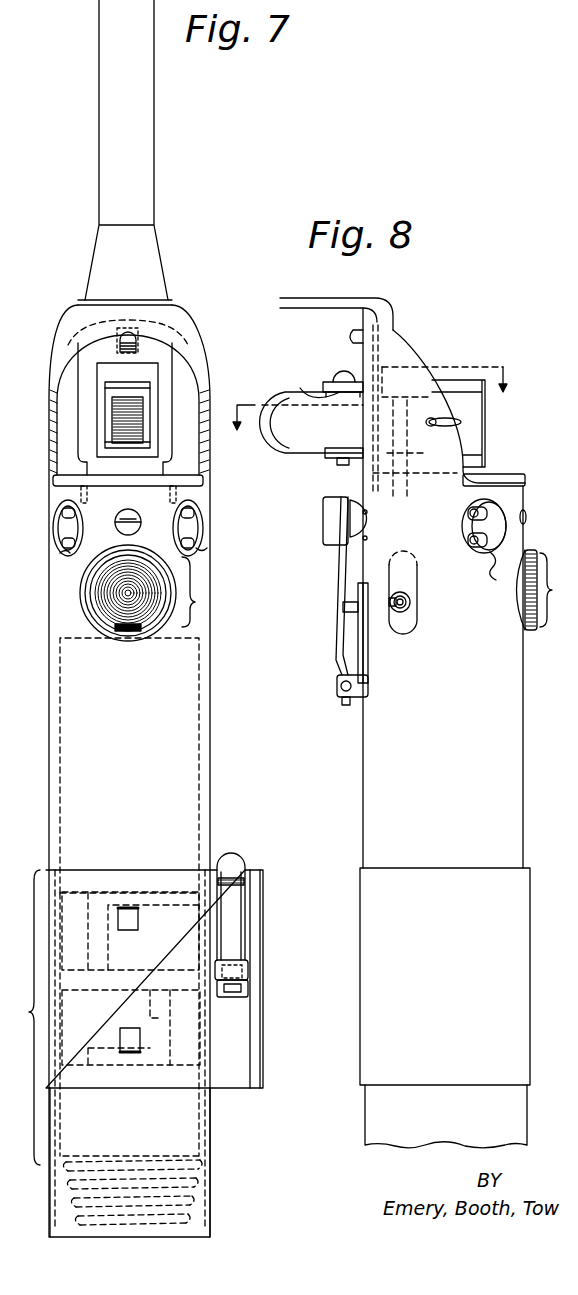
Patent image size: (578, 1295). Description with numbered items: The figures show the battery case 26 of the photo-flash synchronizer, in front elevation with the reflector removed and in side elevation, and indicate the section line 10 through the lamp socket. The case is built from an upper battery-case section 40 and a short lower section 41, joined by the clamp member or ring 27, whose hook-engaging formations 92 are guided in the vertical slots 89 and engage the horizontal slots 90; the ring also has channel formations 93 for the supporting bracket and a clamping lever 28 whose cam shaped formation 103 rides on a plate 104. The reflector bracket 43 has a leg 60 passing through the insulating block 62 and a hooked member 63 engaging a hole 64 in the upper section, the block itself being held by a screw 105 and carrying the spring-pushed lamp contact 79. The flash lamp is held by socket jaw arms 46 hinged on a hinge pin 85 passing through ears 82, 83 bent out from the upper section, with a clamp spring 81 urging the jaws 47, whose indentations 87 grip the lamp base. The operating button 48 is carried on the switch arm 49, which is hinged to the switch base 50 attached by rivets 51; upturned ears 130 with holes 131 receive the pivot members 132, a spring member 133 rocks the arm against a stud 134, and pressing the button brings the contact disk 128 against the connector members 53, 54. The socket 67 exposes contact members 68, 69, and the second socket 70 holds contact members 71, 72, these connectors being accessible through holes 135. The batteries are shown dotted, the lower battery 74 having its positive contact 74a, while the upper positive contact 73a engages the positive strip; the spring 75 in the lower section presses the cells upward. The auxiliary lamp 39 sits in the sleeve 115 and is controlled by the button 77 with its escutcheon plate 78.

In FIG. 8, the section line 10- 10 is at (375, 411).
In FIG. 7, the battery case 26 is at (135, 1017).
In FIG. 7, the battery-case clamp member or ring 27 is at (77, 880).
In FIG. 8, the battery-case clamp member or ring 27 is at (463, 873).
In FIG. 7, the clamping lever 28 is at (233, 866).
In FIG. 7, the auxiliary lamp 39 is at (195, 602).
In FIG. 8, the auxiliary lamp 39 is at (548, 590).
In FIG. 7, the upper battery-case section 40 is at (210, 798).
In FIG. 8, the upper battery-case section 40 is at (516, 758).
In FIG. 7, the lower battery-case section 41 is at (210, 1207).
In FIG. 8, the lower battery-case section 41 is at (517, 1118).
In FIG. 7, the reflector bracket 43 is at (154, 140).
In FIG. 8, the reflector bracket 43 is at (337, 302).
In FIG. 8, the socket jaw arms or clamp members 46 is at (290, 445).
In FIG. 8, the clamping jaws 47 is at (475, 433).
In FIG. 8, the operating button 48 is at (323, 517).
In FIG. 8, the spring member or switch arm 49 is at (338, 596).
In FIG. 8, the bracket or switch base 50 is at (369, 655).
In FIG. 8, the rivets 51 is at (363, 584).
In FIG. 8, the contact member 53 is at (367, 512).
In FIG. 8, the connecting member 54 is at (367, 539).
In FIG. 7, the leg of reflector bracket 60 is at (84, 377).
In FIG. 7, the insulating block 62 is at (133, 481).
In FIG. 8, the insulating block 62 is at (512, 477).
In FIG. 7, the hooked member 63 is at (140, 333).
In FIG. 8, the hooked member 63 is at (353, 335).
In FIG. 7, the hole 64 is at (84, 338).
In FIG. 7, the socket 67 is at (190, 527).
In FIG. 7, the contact member 68 is at (190, 510).
In FIG. 7, the contact member 69 is at (195, 541).
In FIG. 7, the second socket 70 is at (68, 527).
In FIG. 8, the second socket 70 is at (488, 530).
In FIG. 7, the contact member 71 is at (67, 512).
In FIG. 8, the contact member 71 is at (479, 507).
In FIG. 7, the contact member 72 is at (67, 541).
In FIG. 8, the contact member 72 is at (478, 549).
In FIG. 7, the positive contact member 73a is at (126, 633).
In FIG. 7, the battery 74 is at (185, 1125).
In FIG. 7, the positive contact member 74a is at (125, 908).
In FIG. 7, the spring 75 is at (182, 755).
In FIG. 8, the auxiliary lamp control button 77 is at (417, 612).
In FIG. 8, the escutcheon plate 78 is at (417, 585).
In FIG. 8, the contact 79 is at (477, 464).
In FIG. 7, the clamp spring 81 is at (115, 423).
In FIG. 8, the ear 82 is at (330, 384).
In FIG. 8, the ear 83 is at (345, 448).
In FIG. 8, the hinge pin 85 is at (345, 372).
In FIG. 8, the indentations 87 is at (446, 421).
In FIG. 7, the vertical slots 89 is at (100, 950).
In FIG. 7, the horizontal slots 90 is at (160, 905).
In FIG. 7, the hook-engaging formations 92 is at (138, 923).
In FIG. 7, the channel formations 93 is at (253, 898).
In FIG. 7, the cam shaped formation 103 is at (248, 984).
In FIG. 7, the plate 104 is at (245, 969).
In FIG. 7, the screw 105 is at (127, 528).
In FIG. 8, the screw 105 is at (526, 515).
In FIG. 7, the sleeve 115 is at (96, 609).
In FIG. 8, the contact disk 128 is at (362, 498).
In FIG. 8, the upturned ears 130 is at (347, 706).
In FIG. 8, the holes 131 is at (369, 688).
In FIG. 8, the pivot members 132 is at (341, 686).
In FIG. 8, the spring member 133 is at (345, 640).
In FIG. 8, the stud 134 is at (343, 607).
In FIG. 7, the holes 135 is at (62, 553).
In FIG. 8, the holes 135 is at (368, 528).